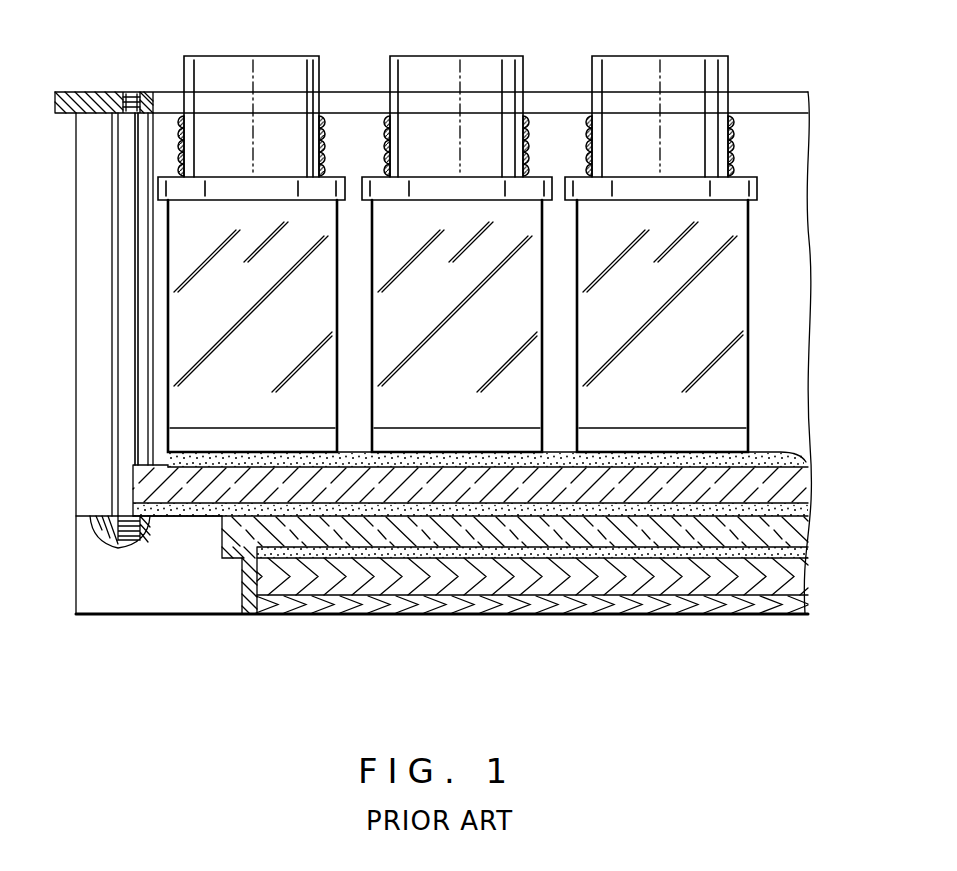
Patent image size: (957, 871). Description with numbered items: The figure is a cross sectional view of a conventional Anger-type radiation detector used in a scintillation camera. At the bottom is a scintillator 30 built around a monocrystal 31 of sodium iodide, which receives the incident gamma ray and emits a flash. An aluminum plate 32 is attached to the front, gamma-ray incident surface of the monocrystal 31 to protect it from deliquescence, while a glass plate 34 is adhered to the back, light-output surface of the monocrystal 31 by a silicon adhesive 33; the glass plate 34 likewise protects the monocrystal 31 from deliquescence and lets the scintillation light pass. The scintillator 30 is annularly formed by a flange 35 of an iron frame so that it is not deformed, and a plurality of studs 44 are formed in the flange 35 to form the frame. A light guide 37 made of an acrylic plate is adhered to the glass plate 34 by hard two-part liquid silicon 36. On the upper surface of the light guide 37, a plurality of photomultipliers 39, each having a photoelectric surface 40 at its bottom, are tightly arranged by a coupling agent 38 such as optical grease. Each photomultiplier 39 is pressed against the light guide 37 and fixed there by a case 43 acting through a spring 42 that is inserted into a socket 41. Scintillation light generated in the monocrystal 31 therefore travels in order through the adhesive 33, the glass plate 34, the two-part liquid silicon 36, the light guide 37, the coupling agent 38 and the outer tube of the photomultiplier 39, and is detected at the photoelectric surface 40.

The scintillator 30 is at (560, 578).
The monocrystal 31 is at (795, 575).
The aluminum plate 32 is at (554, 619).
The silicon adhesive 33 is at (800, 553).
The glass plate 34 is at (798, 535).
The flange 35 is at (158, 616).
The two-part liquid silicon 36 is at (805, 510).
The light guide 37 is at (795, 487).
The coupling agent 38 is at (772, 461).
The photomultiplier 39 is at (748, 278).
The photoelectric surface 40 is at (722, 437).
The socket 41 is at (236, 74).
The spring 42 is at (372, 132).
The case 43 is at (780, 108).
The stud 44 is at (112, 366).